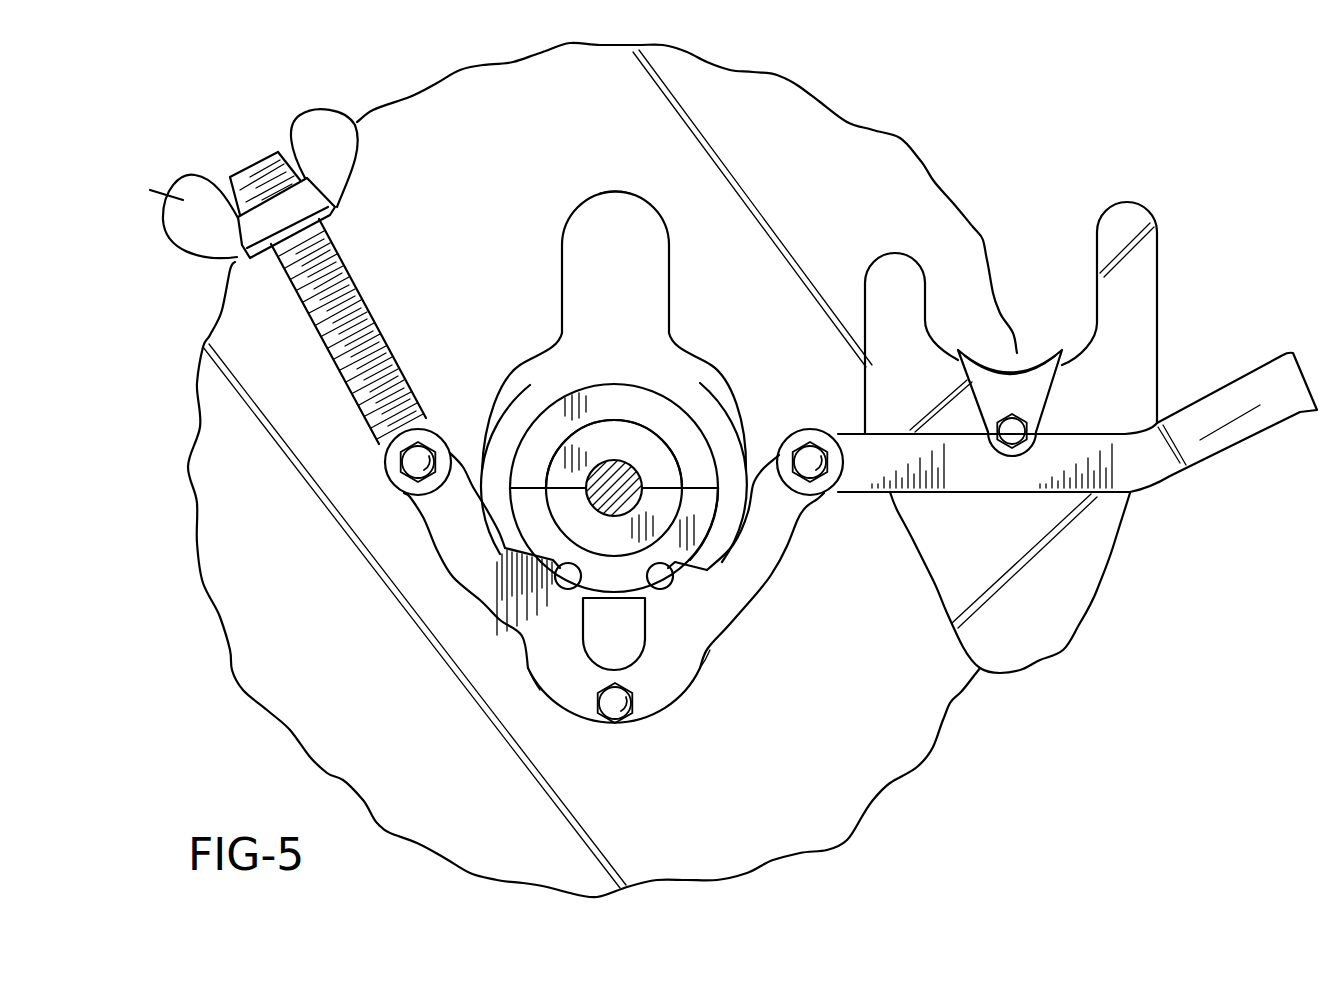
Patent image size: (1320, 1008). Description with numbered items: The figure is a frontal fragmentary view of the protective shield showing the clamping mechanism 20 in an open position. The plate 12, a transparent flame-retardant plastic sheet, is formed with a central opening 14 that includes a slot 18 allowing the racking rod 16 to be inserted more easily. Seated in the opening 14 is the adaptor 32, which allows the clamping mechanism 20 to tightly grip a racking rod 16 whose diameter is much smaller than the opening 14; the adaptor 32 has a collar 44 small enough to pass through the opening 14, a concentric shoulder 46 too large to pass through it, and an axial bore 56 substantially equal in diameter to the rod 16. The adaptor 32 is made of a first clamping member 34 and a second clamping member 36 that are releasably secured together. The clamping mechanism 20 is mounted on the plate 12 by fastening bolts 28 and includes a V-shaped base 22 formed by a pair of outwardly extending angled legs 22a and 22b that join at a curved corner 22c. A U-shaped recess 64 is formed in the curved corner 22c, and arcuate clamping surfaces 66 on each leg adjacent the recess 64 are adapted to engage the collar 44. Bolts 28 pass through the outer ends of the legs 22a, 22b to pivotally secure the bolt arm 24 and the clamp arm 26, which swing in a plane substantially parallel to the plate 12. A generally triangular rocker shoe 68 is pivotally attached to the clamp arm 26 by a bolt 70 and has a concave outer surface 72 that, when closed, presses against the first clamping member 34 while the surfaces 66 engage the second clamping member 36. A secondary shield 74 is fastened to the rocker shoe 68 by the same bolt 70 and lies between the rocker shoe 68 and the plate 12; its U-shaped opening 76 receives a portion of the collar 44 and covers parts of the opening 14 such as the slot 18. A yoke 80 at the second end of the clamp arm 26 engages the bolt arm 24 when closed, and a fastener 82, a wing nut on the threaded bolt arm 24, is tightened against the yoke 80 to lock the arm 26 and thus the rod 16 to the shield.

The plate 12 is at (847, 122).
The central opening 14 is at (703, 382).
The racking rod 16 is at (604, 477).
The slot 18 is at (598, 193).
The clamping mechanism 20 is at (697, 705).
The base 22 is at (625, 735).
The angled leg 22a is at (463, 570).
The angled leg 22b is at (735, 580).
The curved corner 22c is at (657, 703).
The bolt arm 24 is at (307, 324).
The clamp arm 26 is at (1160, 485).
The fastening bolts 28 is at (412, 467).
The adaptor 32 is at (717, 424).
The first clamping member 34 is at (550, 409).
The second clamping member 36 is at (708, 522).
The collar 44 is at (705, 430).
The shoulder 46 is at (594, 427).
The axial bore 56 is at (667, 441).
The U-shaped recess 64 is at (645, 648).
The arcuate clamping surfaces 66 is at (577, 580).
The rocker shoe 68 is at (1033, 394).
The bolt 70 is at (1013, 435).
The concave outer surface 72 is at (1038, 355).
The secondary shield 74 is at (1140, 307).
The U-shaped opening 76 is at (1090, 293).
The yoke 80 is at (1247, 423).
The fastener 82 is at (183, 200).